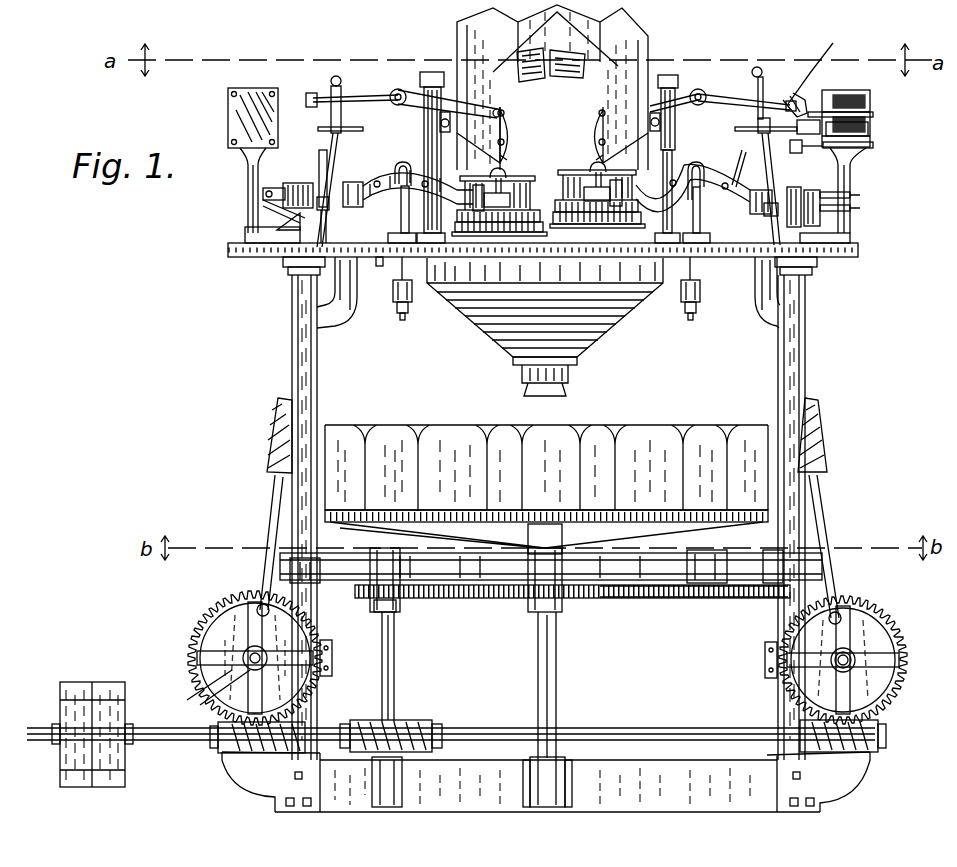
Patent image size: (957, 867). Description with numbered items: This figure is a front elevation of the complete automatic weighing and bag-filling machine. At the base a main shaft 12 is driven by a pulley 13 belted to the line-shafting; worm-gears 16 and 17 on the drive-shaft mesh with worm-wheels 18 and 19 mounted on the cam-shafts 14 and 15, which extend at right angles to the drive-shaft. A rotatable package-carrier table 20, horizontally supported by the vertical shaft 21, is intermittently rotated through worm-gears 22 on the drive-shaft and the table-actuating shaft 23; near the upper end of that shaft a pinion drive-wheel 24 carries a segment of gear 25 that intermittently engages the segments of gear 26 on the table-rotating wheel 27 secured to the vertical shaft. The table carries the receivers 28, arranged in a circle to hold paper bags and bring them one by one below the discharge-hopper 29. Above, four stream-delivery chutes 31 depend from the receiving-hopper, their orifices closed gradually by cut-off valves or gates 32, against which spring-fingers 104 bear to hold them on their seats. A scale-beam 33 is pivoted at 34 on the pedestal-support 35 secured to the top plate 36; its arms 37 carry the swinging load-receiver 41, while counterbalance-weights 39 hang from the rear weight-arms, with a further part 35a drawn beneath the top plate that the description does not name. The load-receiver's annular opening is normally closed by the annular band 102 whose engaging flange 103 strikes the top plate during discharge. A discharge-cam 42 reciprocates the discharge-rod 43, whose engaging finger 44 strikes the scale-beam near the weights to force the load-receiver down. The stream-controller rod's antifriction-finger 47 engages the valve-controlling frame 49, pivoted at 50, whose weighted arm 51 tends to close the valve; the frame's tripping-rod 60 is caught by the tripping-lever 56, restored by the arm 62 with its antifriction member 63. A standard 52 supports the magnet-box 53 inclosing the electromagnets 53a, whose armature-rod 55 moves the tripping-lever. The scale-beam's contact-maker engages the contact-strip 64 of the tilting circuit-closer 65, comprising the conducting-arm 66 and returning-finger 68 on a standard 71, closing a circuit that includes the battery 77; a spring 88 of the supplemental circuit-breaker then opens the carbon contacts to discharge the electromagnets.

The main shaft 12 is at (640, 728).
The pulley 13 is at (92, 724).
The cam-shaft 14 is at (850, 656).
The cam-shaft 15 is at (210, 693).
The worm-gear 16 is at (850, 752).
The worm-gear 17 is at (240, 752).
The worm-wheel 18 is at (195, 656).
The worm-wheel 19 is at (905, 652).
The package-carrier table 20 is at (470, 516).
The vertical shaft 21 is at (558, 672).
The worm-gears 22 is at (400, 722).
The table-actuating shaft 23 is at (396, 668).
The pinion drive-wheel 24 is at (398, 604).
The segment of gear 25 is at (368, 600).
The segments of gear 26 is at (640, 600).
The table-rotating wheel 27 is at (580, 600).
The receivers 28 is at (575, 417).
The discharge-hopper 29 is at (600, 300).
The stream-delivery chutes 31 is at (632, 42).
The cut-off valves or gates 32 is at (598, 150).
The scale-beam 33 is at (662, 195).
The pivot 34 is at (705, 170).
The pedestal-support 35 is at (700, 210).
The weight 35a is at (700, 300).
The top plate 36 is at (380, 266).
The arms 37 is at (742, 186).
The counterbalance-weights 39 is at (775, 250).
The load-receiver 41 is at (575, 185).
The discharge-cam 42 is at (870, 670).
The discharge-rod 43 is at (826, 478).
The engaging finger 44 is at (815, 262).
The antifriction-finger 47 is at (812, 70).
The valve-controlling frame 49 is at (668, 78).
The pivot 50 is at (702, 88).
The weighted arm 51 is at (586, 70).
The standard 52 is at (852, 182).
The magnet-box 53 is at (872, 98).
The electromagnets 53a is at (870, 130).
The armature-rod 55 is at (875, 116).
The tripping-lever 56 is at (806, 97).
The tripping-rod 60 is at (728, 98).
The arm 62 is at (735, 130).
The antifriction member 63 is at (740, 165).
The contact-strip 64 is at (800, 188).
The circuit-closer 65 is at (822, 196).
The conducting-arm 66 is at (280, 186).
The returning-finger 68 is at (852, 196).
The standard 71 is at (283, 222).
The battery 77 is at (860, 208).
The spring 88 is at (850, 148).
The annular band 102 is at (540, 212).
The engaging flange 103 is at (553, 232).
The spring-fingers 104 is at (592, 125).